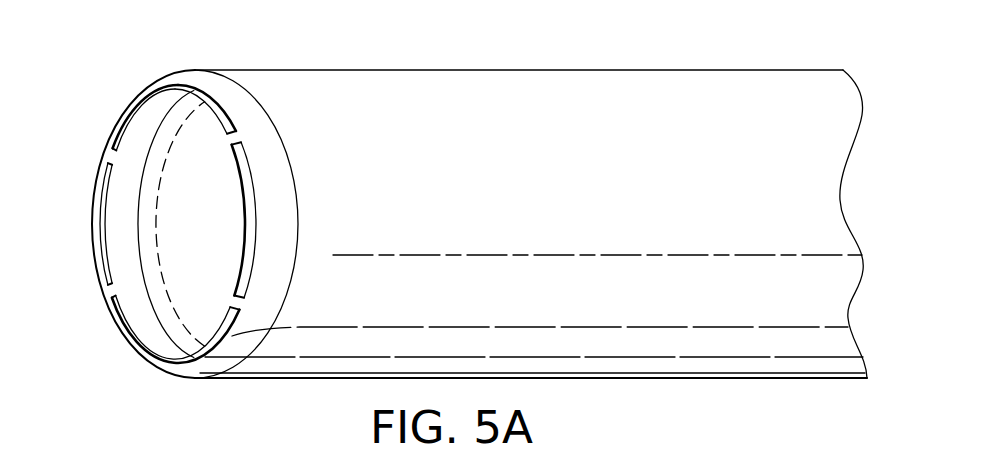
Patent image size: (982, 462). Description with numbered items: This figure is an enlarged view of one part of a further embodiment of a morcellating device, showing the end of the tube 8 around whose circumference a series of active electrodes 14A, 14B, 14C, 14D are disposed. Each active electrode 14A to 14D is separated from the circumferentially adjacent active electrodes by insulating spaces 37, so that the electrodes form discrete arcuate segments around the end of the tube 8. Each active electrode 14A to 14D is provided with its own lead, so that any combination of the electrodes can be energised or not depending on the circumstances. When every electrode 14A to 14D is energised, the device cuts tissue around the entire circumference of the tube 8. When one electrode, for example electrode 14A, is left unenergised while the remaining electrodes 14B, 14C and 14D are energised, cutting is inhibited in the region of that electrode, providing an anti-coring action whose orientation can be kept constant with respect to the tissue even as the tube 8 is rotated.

The tube 8 is at (711, 77).
The active electrode 14A is at (123, 110).
The active electrode 14B is at (221, 99).
The active electrode 14C is at (253, 184).
The active electrode 14D is at (219, 343).
The insulating space 37 is at (238, 144).